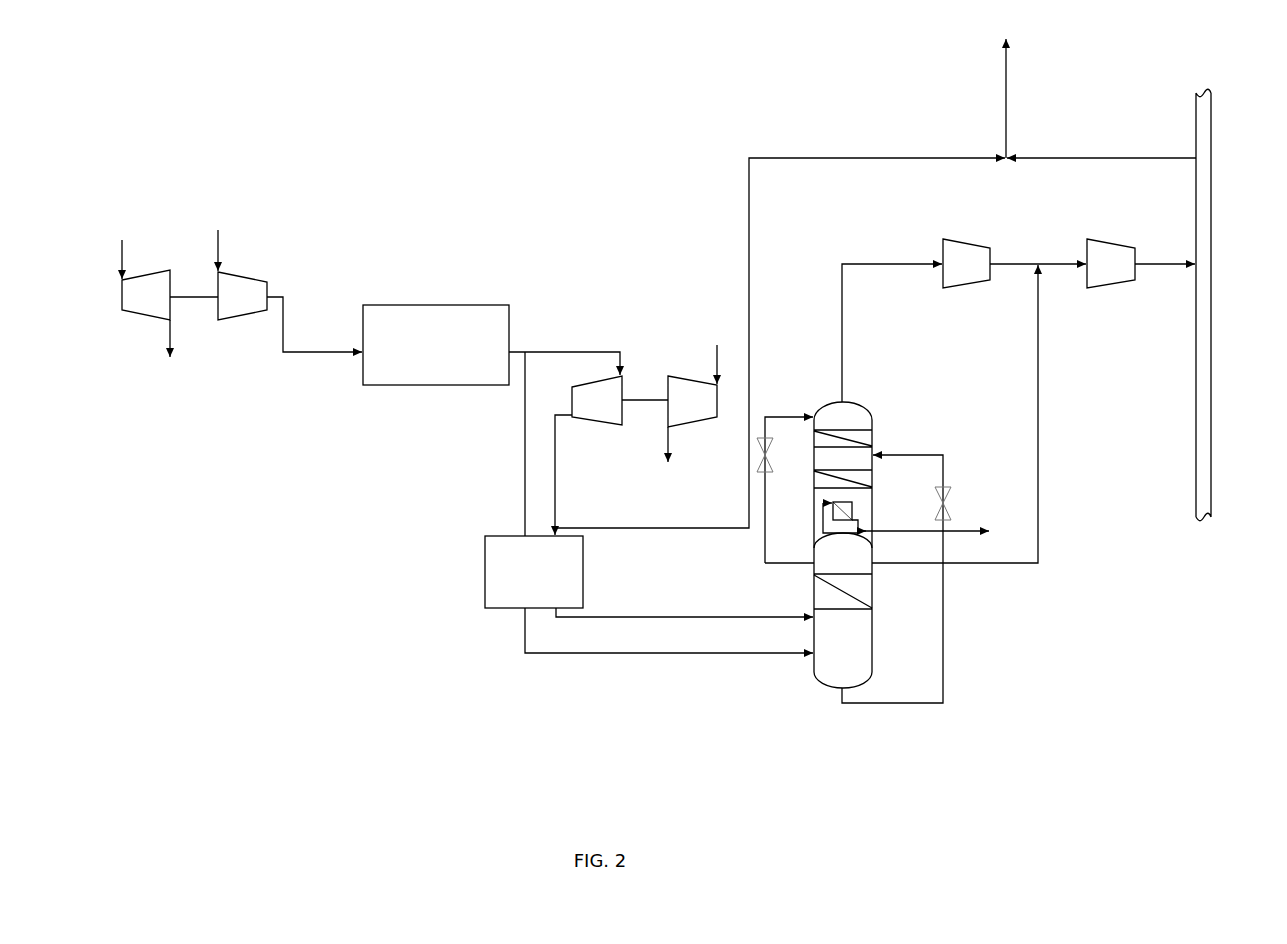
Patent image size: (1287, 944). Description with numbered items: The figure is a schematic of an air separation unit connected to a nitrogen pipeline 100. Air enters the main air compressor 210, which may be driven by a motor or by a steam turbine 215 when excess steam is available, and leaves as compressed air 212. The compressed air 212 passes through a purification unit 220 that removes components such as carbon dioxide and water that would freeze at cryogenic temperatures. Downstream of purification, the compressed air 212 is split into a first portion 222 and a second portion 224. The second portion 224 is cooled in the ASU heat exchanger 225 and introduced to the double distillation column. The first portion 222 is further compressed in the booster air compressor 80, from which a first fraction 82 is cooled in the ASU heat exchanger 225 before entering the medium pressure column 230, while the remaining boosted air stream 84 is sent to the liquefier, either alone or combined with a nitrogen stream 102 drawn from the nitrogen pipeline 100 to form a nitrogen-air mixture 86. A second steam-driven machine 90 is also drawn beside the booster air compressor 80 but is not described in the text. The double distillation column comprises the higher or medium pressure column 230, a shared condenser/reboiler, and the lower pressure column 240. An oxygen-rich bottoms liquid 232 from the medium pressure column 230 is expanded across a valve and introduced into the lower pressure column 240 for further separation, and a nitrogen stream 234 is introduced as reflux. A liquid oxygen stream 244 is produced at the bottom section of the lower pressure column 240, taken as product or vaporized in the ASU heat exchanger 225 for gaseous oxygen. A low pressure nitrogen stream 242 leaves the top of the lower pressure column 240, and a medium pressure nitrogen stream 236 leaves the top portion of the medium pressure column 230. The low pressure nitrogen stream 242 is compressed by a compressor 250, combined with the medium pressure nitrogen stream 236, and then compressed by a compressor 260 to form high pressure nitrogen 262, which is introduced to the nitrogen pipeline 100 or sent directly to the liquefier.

The steam turbine 215 is at (145, 302).
The main air compressor 210 is at (218, 264).
The compressed air 212 is at (334, 351).
The purification unit 220 is at (426, 303).
The first portion 222 is at (597, 350).
The second portion 224 is at (525, 459).
The ASU heat exchanger 225 is at (485, 562).
The booster air compressor 80 is at (611, 455).
The steam turbine 90 is at (692, 403).
The remaining boosted air stream 84 is at (622, 528).
The first fraction 82 is at (661, 616).
The medium pressure column 230 is at (872, 626).
The bottoms liquid 232 is at (930, 703).
The nitrogen stream 234 is at (765, 490).
The medium pressure nitrogen stream 236 is at (1038, 410).
The lower pressure column 240 is at (872, 512).
The low pressure nitrogen stream 242 is at (842, 370).
The liquid oxygen stream 244 is at (953, 528).
The compressor 250 is at (1014, 263).
The compressor 260 is at (1111, 263).
The high pressure nitrogen 262 is at (1147, 264).
The nitrogen stream 102 is at (1071, 158).
The nitrogen-air mixture 86 is at (1006, 110).
The nitrogen pipeline 100 is at (1212, 225).